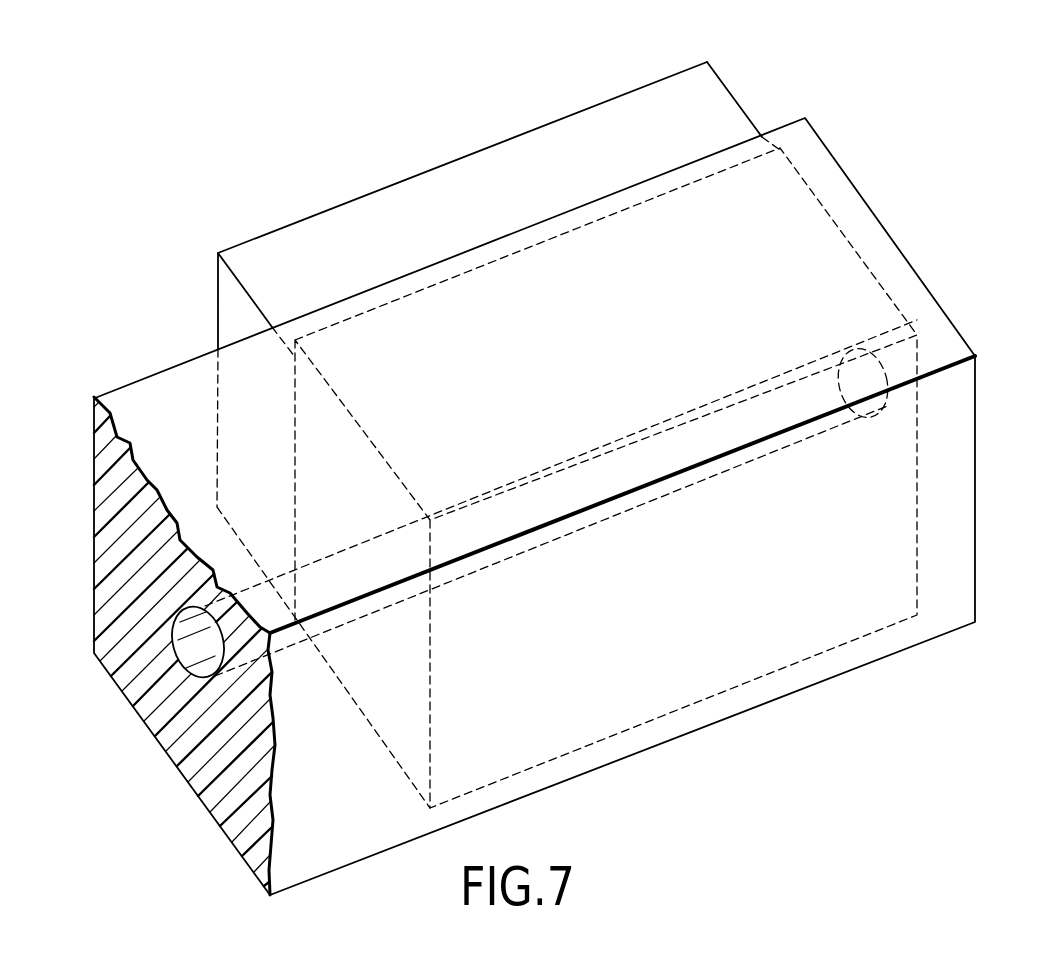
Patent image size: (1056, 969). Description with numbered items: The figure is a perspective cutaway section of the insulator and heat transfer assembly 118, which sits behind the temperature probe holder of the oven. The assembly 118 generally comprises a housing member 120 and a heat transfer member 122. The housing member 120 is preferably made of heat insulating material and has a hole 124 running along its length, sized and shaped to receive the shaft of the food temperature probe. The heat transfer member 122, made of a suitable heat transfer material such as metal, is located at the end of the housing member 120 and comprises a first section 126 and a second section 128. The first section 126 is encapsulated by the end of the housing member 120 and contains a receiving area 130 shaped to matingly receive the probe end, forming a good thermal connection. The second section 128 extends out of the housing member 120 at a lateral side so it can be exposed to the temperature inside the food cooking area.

The insulator and heat transfer assembly 118 is at (975, 622).
The housing member 120 is at (94, 553).
The heat transfer member 122 is at (313, 212).
The hole 124 is at (193, 652).
The first section 126 is at (780, 238).
The second section 128 is at (715, 106).
The receiving area 130 is at (615, 470).